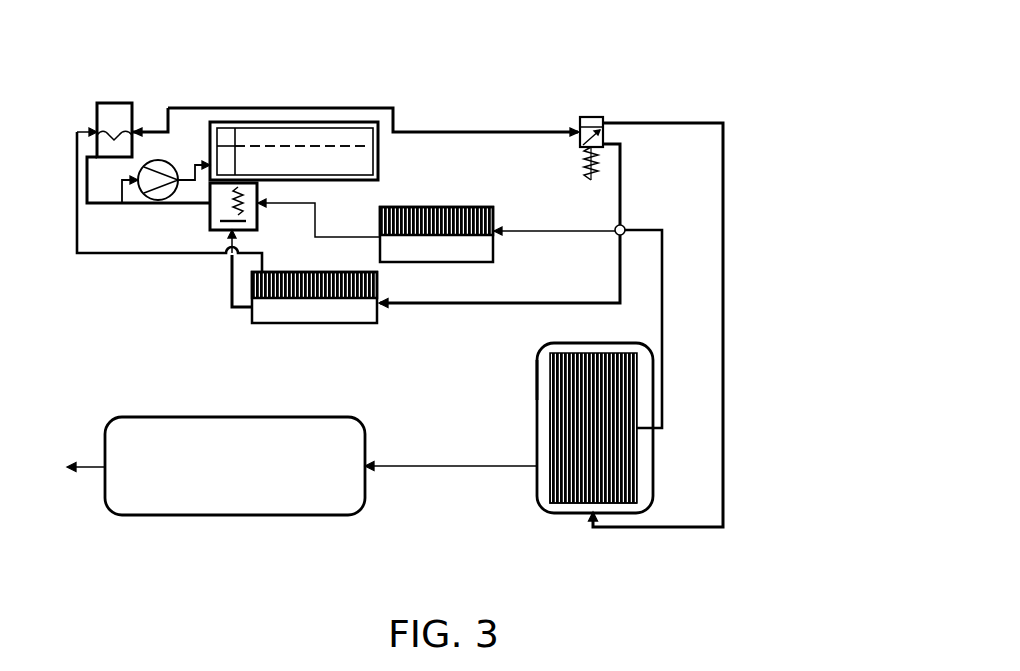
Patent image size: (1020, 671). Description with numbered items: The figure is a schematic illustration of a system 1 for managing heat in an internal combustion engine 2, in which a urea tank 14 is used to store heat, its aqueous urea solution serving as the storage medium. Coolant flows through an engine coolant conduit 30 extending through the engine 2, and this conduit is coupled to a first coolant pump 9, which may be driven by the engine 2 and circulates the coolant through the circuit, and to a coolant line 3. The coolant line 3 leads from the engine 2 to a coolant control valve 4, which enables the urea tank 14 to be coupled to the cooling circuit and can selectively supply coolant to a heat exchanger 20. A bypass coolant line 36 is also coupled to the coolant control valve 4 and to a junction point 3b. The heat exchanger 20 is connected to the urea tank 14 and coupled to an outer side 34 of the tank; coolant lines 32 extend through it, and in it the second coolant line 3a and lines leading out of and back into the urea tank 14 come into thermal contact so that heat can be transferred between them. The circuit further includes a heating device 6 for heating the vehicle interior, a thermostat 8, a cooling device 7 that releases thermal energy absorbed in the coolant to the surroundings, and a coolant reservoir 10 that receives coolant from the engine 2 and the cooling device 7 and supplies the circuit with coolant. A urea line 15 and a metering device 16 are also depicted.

The system 1 is at (748, 101).
The internal combustion engine 2 is at (380, 160).
The coolant line 3 is at (490, 134).
The coolant line 3a is at (724, 250).
The junction point 3b is at (627, 223).
The coolant control valve 4 is at (588, 116).
The heating device 6 is at (494, 247).
The cooling device 7 is at (380, 287).
The thermostat 8 is at (216, 220).
The first coolant pump 9 is at (140, 196).
The coolant reservoir 10 is at (112, 101).
The urea tank 14 is at (645, 445).
The urea line 15 is at (425, 468).
The metering device 16 is at (232, 506).
The heat exchanger 20 is at (548, 487).
The engine coolant conduit 30 is at (240, 158).
The coolant lines 32 is at (553, 445).
The outer side 34 is at (545, 375).
The bypass coolant line 36 is at (620, 178).